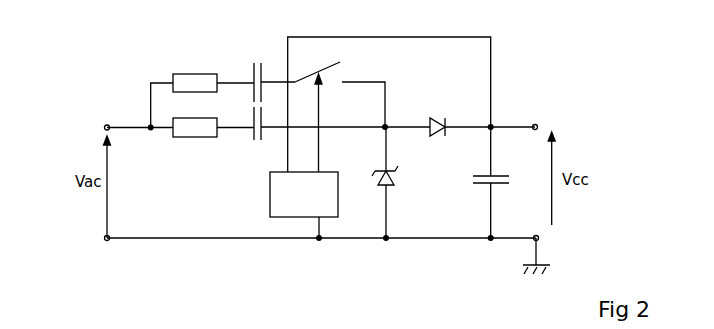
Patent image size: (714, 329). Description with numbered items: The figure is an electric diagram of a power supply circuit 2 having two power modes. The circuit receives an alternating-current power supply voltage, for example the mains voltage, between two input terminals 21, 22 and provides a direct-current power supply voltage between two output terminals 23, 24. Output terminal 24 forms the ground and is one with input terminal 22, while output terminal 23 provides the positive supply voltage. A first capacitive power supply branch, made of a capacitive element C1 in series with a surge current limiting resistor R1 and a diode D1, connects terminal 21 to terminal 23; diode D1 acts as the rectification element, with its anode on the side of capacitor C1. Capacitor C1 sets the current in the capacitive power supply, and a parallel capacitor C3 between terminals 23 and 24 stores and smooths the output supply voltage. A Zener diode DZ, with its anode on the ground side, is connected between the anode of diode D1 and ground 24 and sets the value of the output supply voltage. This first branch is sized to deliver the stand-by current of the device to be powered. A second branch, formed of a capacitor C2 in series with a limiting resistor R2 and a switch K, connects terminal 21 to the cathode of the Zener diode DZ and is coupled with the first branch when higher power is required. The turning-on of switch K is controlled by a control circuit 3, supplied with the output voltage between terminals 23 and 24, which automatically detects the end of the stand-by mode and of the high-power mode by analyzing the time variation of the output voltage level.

The power supply circuit 2 is at (183, 269).
The control circuit 3 is at (270, 192).
The input terminal 21 is at (105, 126).
The input terminal 22 is at (105, 240).
The output terminal 23 is at (537, 125).
The output terminal 24 is at (538, 238).
The surge current limiting resistor R1 is at (195, 139).
The limiting resistor R2 is at (202, 91).
The capacitive element C1 is at (257, 137).
The capacitor C2 is at (271, 74).
The parallel capacitor C3 is at (478, 182).
The diode D1 is at (438, 117).
The Zener diode DZ is at (395, 182).
The switch K is at (323, 62).